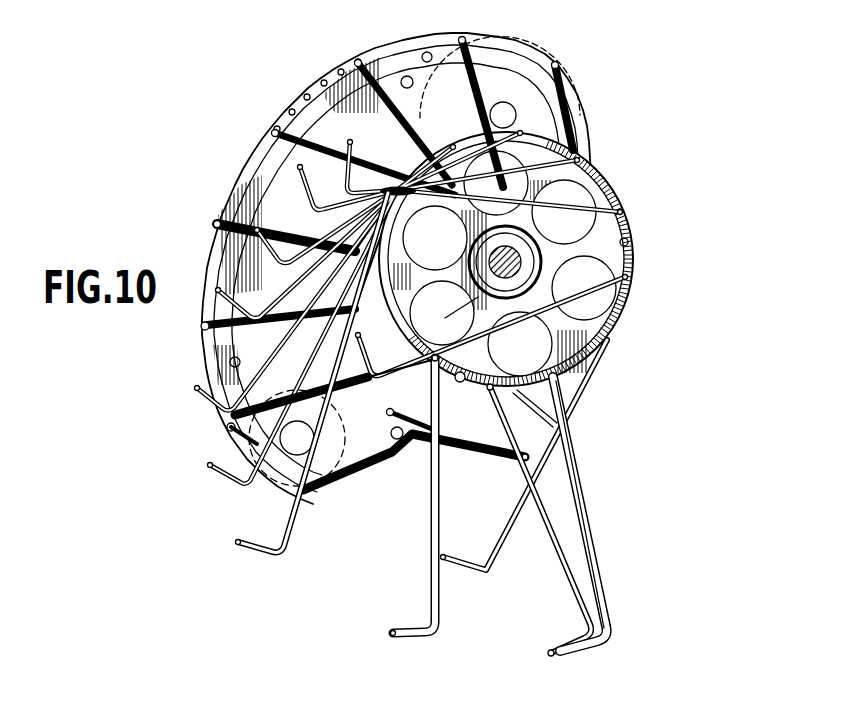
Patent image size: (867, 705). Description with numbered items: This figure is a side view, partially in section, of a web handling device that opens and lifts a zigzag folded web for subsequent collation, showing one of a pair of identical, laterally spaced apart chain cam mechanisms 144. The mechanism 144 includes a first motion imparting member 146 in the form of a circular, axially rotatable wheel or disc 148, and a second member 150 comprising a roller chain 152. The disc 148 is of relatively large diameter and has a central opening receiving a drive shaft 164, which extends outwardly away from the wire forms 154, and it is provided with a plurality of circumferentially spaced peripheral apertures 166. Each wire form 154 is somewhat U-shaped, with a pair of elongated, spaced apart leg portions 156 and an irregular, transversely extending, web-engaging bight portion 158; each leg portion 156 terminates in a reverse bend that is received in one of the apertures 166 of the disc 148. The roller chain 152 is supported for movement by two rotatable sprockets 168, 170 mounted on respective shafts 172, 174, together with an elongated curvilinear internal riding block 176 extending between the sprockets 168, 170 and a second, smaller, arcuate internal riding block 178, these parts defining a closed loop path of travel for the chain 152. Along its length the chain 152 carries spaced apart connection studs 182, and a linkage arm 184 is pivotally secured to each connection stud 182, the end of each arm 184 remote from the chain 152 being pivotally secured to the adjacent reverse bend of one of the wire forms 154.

The chain cam mechanism 144 is at (672, 110).
The first motion imparting member 146 is at (648, 204).
The disc 148 is at (613, 258).
The second member 150 is at (218, 178).
The roller chain 152 is at (266, 147).
The wire form 154 is at (603, 482).
The leg portion 156 is at (597, 553).
The bight portion 158 is at (600, 643).
The drive shaft 164 is at (483, 261).
The peripheral aperture 166 is at (625, 327).
The sprocket 168 is at (255, 443).
The sprocket 170 is at (513, 57).
The shaft 172 is at (293, 449).
The shaft 174 is at (503, 113).
The internal riding block 176 is at (390, 67).
The internal riding block 178 is at (447, 342).
The connection stud 182 is at (203, 326).
The linkage arm 184 is at (331, 492).